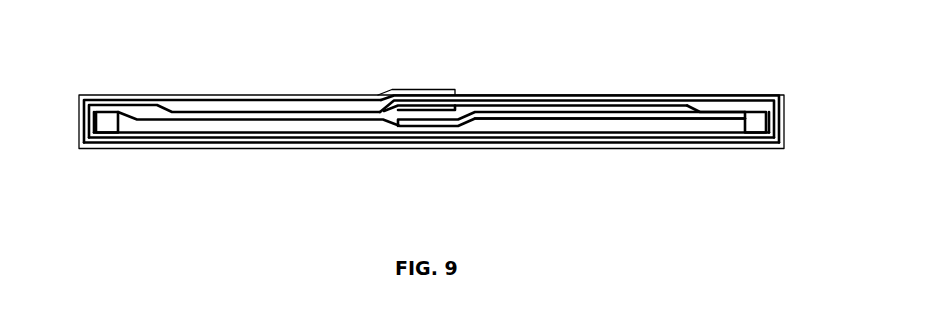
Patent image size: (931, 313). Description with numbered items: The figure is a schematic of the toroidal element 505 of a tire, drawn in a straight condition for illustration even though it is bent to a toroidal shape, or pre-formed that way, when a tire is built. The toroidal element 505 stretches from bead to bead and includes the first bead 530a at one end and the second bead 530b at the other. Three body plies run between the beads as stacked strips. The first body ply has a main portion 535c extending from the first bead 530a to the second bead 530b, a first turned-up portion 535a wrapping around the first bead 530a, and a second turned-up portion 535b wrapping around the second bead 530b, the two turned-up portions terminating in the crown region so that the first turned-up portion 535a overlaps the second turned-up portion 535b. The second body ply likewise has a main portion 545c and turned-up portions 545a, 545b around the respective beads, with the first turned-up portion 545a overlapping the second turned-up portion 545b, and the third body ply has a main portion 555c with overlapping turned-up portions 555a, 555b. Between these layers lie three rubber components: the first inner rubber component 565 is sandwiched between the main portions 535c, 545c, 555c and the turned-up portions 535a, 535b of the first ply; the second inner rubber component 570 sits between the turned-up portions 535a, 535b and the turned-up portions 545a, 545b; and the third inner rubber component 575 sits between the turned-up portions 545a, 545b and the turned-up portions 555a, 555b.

The toroidal element 505 is at (746, 59).
The first bead 530a is at (752, 125).
The second bead 530b is at (107, 125).
The first turned-up portion of first body ply 535a is at (548, 116).
The second turned-up portion of first body ply 535b is at (319, 116).
The main portion of first body ply 535c is at (488, 144).
The first turned-up portion of second body ply 545a is at (590, 101).
The second turned-up portion of second body ply 545b is at (368, 101).
The main portion of second body ply 545c is at (282, 144).
The first turned-up portion of third body ply 555a is at (486, 98).
The second turned-up portion of third body ply 555b is at (246, 99).
The main portion of third body ply 555c is at (621, 139).
The first inner rubber component 565 is at (388, 129).
The second inner rubber component 570 is at (700, 108).
The third inner rubber component 575 is at (633, 106).